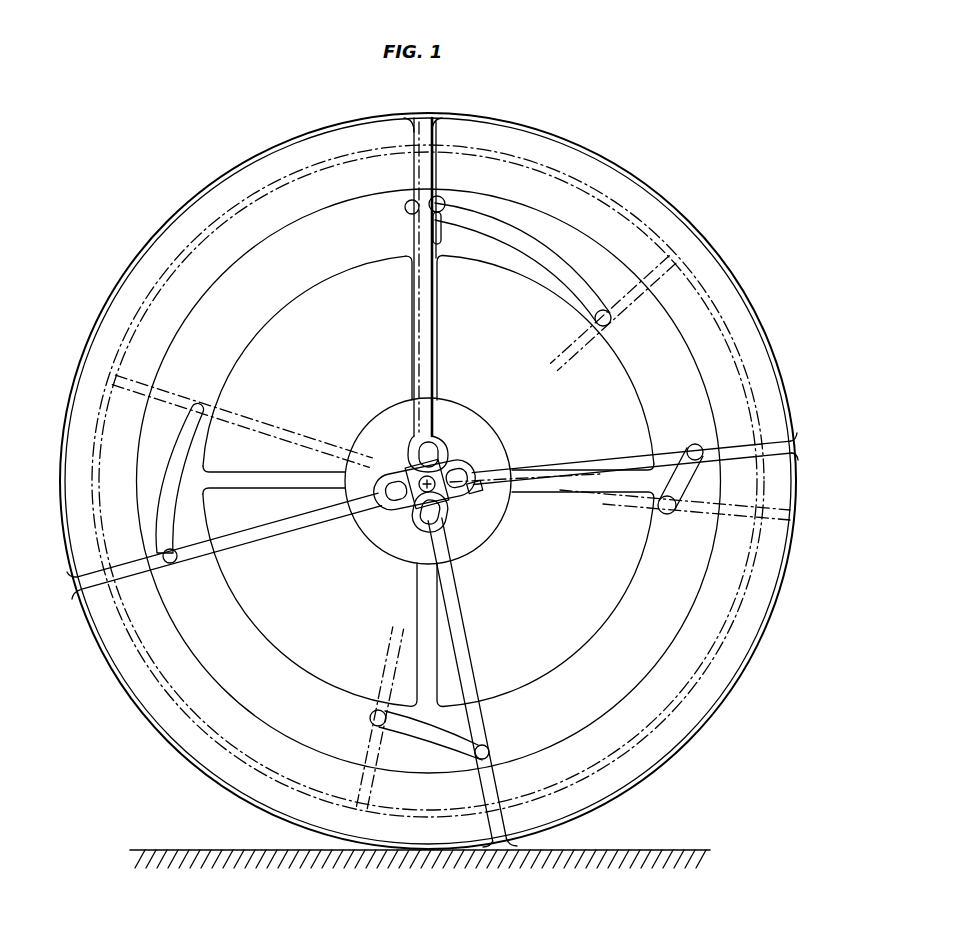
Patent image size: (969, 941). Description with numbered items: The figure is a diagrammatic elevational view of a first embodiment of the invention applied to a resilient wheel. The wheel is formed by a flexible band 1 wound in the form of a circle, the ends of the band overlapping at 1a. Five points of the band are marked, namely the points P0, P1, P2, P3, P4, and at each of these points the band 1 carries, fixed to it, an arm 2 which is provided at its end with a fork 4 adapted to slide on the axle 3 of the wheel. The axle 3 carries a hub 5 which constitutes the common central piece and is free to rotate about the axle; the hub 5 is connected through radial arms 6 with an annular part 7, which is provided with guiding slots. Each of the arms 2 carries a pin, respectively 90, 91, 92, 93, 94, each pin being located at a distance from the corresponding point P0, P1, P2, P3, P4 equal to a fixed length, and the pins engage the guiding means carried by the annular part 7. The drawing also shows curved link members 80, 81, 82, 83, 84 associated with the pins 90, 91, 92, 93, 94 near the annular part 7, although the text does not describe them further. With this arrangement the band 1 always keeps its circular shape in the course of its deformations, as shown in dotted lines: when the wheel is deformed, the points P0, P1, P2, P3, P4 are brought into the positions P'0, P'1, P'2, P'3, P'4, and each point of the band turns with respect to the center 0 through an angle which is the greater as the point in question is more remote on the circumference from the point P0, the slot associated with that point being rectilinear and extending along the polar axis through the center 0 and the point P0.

The flexible band 1 is at (636, 182).
The overlap of band ends 1a is at (433, 117).
The arm 2 is at (584, 466).
The axle 3 is at (440, 478).
The fork 4 is at (482, 480).
The hub 5 is at (460, 552).
The radial arms 6 is at (574, 490).
The annular part 7 is at (526, 690).
The center 0 is at (415, 494).
The link 80 is at (440, 228).
The link 81 is at (701, 483).
The link 82 is at (441, 746).
The curved link 83 is at (177, 488).
The curved link 84 is at (565, 272).
The pin 90 is at (441, 199).
The pin 91 is at (695, 445).
The pin 92 is at (489, 753).
The pin 93 is at (173, 563).
The pin 94 is at (408, 203).
The point of the band P0 is at (437, 115).
The point of the band P1 is at (794, 446).
The point of the band P2 is at (497, 848).
The point of the band P3 is at (84, 586).
The point of the band P4 is at (418, 114).
The displaced position of point p0 P'0 is at (428, 471).
The displaced position of point p1 P'1 is at (694, 511).
The displaced position of point p2 P'2 is at (337, 738).
The displaced position of point p3 P'3 is at (206, 417).
The displaced position of point p4 P'4 is at (645, 295).